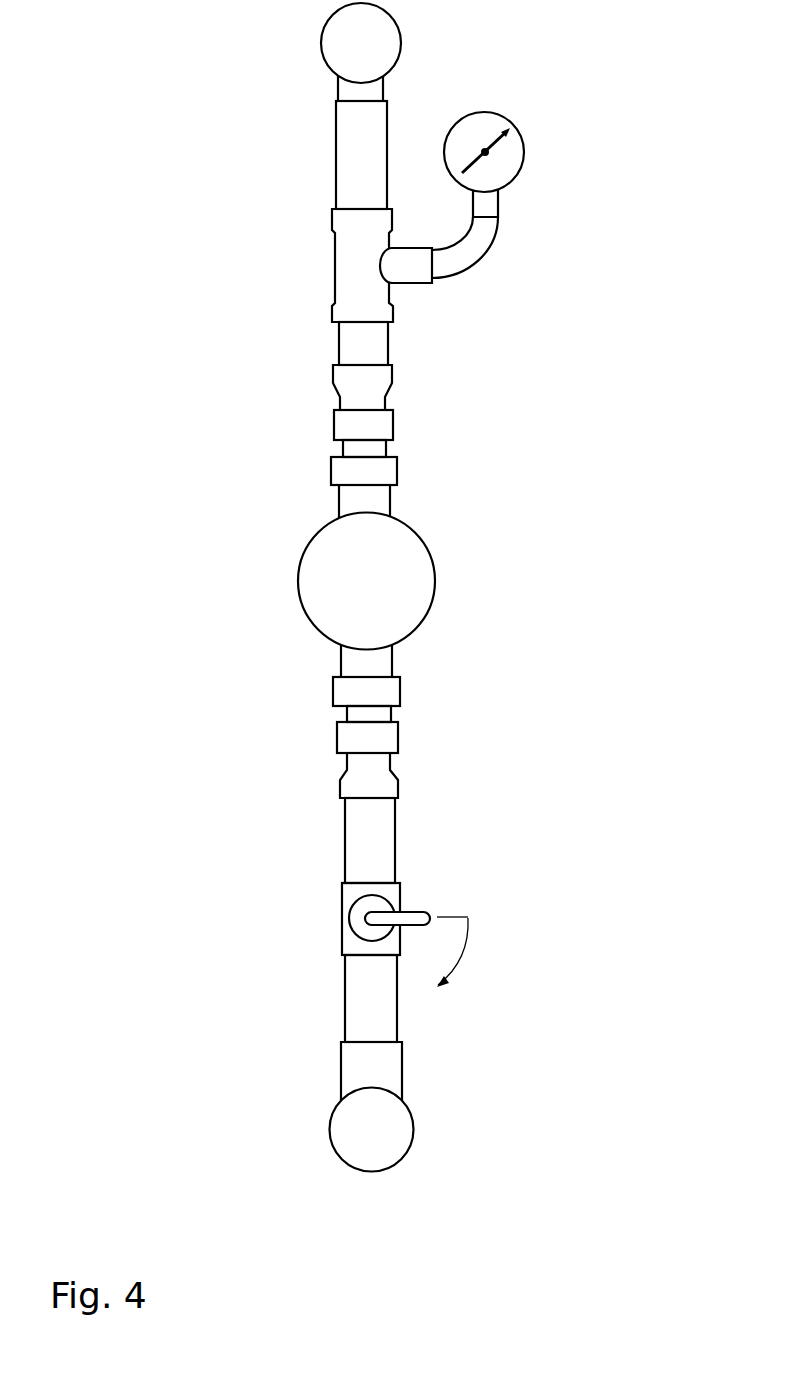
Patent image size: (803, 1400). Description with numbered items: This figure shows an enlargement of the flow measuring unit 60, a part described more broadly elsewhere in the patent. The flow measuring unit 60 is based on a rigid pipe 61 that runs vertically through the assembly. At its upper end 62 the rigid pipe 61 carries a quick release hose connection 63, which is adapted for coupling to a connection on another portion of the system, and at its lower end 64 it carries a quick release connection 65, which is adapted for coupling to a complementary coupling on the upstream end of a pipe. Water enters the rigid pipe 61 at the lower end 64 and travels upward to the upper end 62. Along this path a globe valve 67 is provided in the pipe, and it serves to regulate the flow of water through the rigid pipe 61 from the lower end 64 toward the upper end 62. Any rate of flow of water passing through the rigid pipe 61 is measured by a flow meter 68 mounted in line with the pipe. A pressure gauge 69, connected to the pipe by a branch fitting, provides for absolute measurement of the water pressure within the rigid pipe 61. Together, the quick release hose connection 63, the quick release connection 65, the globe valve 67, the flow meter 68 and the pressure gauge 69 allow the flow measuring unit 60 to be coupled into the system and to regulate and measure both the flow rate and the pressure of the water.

The flow measuring unit 60 is at (339, 348).
The rigid pipe 61 is at (345, 846).
The upper end 62 is at (338, 90).
The quick release hose connection 63 is at (321, 45).
The lower end 64 is at (341, 1068).
The quick release connection 65 is at (330, 1130).
The globe valve 67 is at (342, 921).
The flow meter 68 is at (298, 583).
The pressure gauge 69 is at (527, 152).